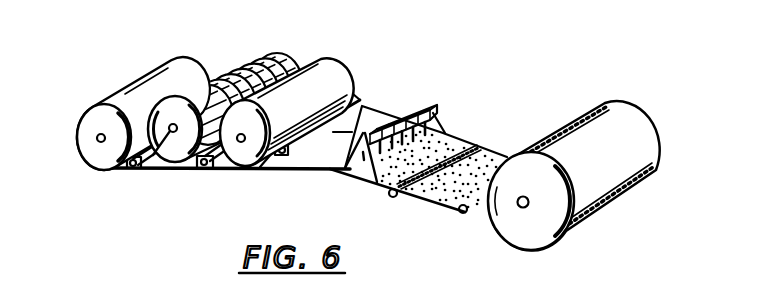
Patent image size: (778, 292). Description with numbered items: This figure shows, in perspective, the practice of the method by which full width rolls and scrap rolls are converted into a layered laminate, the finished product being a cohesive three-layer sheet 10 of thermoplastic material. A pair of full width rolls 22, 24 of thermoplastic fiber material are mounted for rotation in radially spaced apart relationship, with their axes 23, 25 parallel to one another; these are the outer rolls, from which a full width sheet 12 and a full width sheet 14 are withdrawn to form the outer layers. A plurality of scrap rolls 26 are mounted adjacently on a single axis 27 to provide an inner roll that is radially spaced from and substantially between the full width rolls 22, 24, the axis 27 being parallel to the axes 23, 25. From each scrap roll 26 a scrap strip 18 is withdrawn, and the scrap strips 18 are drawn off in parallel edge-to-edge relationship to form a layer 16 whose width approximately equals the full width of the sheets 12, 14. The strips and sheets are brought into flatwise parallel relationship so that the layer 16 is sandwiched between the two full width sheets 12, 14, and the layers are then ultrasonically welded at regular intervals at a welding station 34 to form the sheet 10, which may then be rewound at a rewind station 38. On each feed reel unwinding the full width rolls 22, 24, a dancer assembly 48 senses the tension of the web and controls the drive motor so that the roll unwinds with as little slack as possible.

The layered sheet 10 is at (483, 147).
The full width sheet 12 is at (368, 112).
The full width sheet 14 is at (171, 170).
The layer 16 is at (246, 149).
The scrap strip 18 is at (217, 151).
The full width roll 22 is at (157, 67).
The axis 23 is at (97, 139).
The full width roll 24 is at (330, 60).
The axis 25 is at (240, 142).
The scrap roll 26 is at (258, 52).
The axis 27 is at (136, 174).
The welding station 34 is at (372, 183).
The rewind station 38 is at (511, 250).
The dancer assembly 48 is at (124, 170).